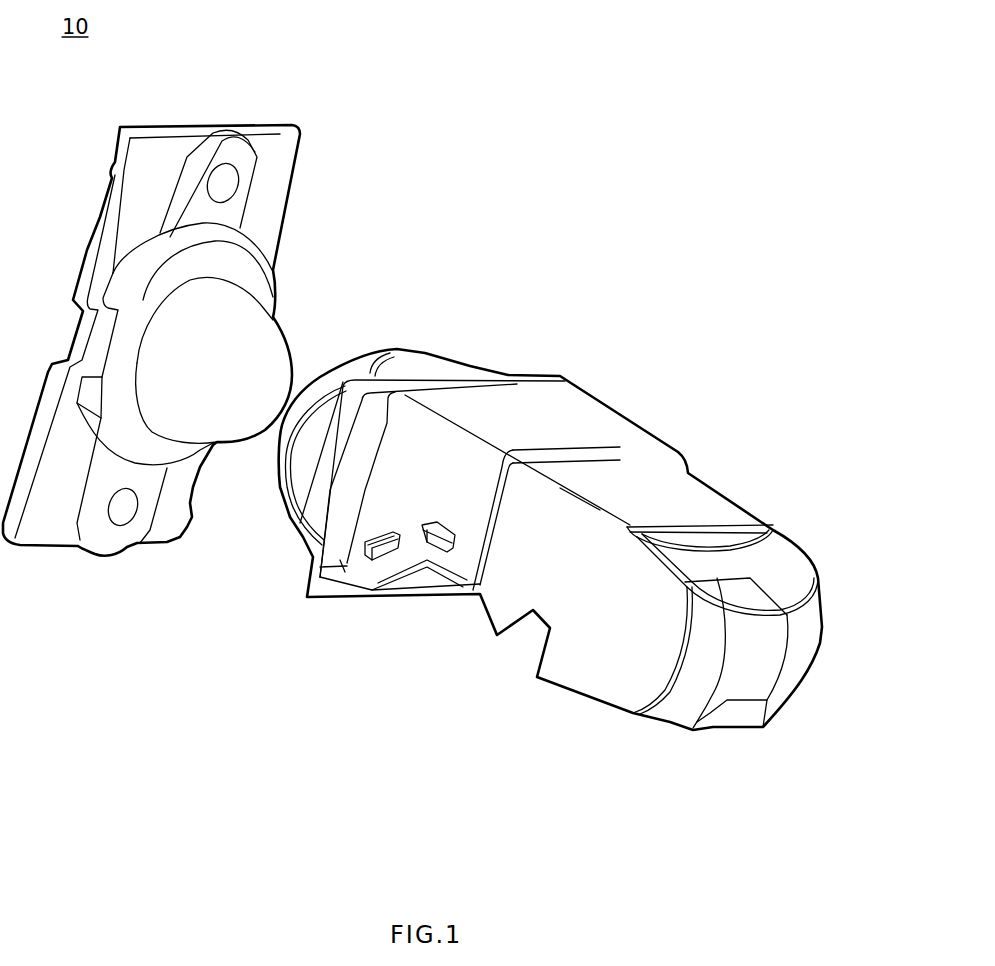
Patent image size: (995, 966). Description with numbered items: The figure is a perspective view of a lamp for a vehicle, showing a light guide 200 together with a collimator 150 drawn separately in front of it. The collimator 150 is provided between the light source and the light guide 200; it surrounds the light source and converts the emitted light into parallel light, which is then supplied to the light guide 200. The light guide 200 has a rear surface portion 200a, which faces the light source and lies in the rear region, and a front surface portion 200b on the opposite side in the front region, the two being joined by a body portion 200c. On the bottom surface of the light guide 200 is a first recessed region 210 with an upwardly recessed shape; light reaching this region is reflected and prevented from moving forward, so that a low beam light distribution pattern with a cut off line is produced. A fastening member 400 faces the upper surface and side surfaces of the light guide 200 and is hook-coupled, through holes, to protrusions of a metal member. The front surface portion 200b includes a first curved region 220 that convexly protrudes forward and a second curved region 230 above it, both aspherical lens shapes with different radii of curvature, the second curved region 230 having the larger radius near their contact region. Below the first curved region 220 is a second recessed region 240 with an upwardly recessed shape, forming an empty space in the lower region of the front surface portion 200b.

The collimator 150 is at (283, 272).
The light guide 200 is at (418, 346).
The rear surface portion 200a is at (280, 480).
The front surface portion 200b is at (833, 618).
The body portion 200c is at (577, 600).
The first recessed region 210 is at (444, 609).
The first curved region 220 is at (683, 700).
The second curved region 230 is at (710, 717).
The second recessed region 240 is at (755, 729).
The fastening member 400 is at (378, 511).